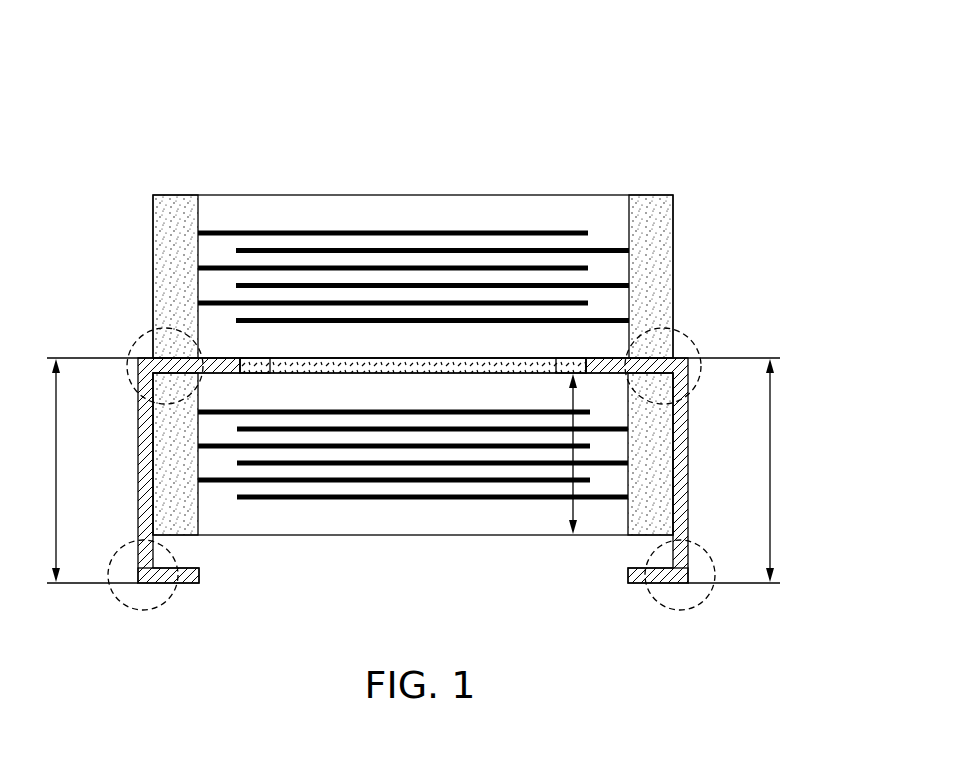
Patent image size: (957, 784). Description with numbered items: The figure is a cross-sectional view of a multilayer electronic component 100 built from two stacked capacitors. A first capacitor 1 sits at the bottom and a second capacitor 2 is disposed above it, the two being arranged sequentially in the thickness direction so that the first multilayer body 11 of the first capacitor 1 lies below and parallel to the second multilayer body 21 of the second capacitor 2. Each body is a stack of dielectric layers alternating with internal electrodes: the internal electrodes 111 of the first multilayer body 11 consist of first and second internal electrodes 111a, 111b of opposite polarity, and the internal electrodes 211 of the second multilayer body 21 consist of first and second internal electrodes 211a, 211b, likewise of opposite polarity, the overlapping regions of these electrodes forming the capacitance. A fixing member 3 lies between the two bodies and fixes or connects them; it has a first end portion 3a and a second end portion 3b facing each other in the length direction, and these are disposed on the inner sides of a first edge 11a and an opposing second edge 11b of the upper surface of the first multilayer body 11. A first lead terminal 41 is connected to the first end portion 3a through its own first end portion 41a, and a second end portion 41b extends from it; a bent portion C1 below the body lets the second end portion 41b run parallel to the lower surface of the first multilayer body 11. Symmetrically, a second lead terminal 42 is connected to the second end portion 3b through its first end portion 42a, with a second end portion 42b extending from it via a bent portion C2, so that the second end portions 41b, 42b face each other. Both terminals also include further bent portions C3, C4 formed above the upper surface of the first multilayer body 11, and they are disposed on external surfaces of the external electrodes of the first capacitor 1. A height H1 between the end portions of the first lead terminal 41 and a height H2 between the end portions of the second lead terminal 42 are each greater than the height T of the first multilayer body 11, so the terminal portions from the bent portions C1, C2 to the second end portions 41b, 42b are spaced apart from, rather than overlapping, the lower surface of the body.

The multilayer electronic component 100 is at (605, 43).
The first capacitor 1 is at (497, 546).
The first multilayer body 11 is at (547, 521).
The first edge 11a is at (190, 400).
The second edge 11b is at (636, 400).
The internal electrodes 111 is at (345, 590).
The first internal electrode 111a is at (206, 414).
The second internal electrode 111b is at (272, 432).
The second capacitor 2 is at (264, 188).
The second multilayer body 21 is at (302, 194).
The internal electrodes 211 is at (385, 122).
The first internal electrode 211a is at (398, 231).
The second internal electrode 211b is at (474, 247).
The fixing member 3 is at (440, 375).
The first end portion 3a is at (246, 358).
The second end portion 3b is at (578, 358).
The first lead terminal 41 is at (140, 472).
The first end portion 41a is at (190, 360).
The second end portion 41b is at (178, 584).
The second lead terminal 42 is at (688, 472).
The first end portion 42a is at (642, 360).
The second end portion 42b is at (638, 584).
The bent portion C1 is at (122, 600).
The bent portion C2 is at (703, 602).
The bent portion C3 is at (142, 334).
The bent portion C4 is at (686, 334).
The height H1 is at (40, 470).
The height H2 is at (785, 470).
The height of the first multilayer body T is at (575, 458).